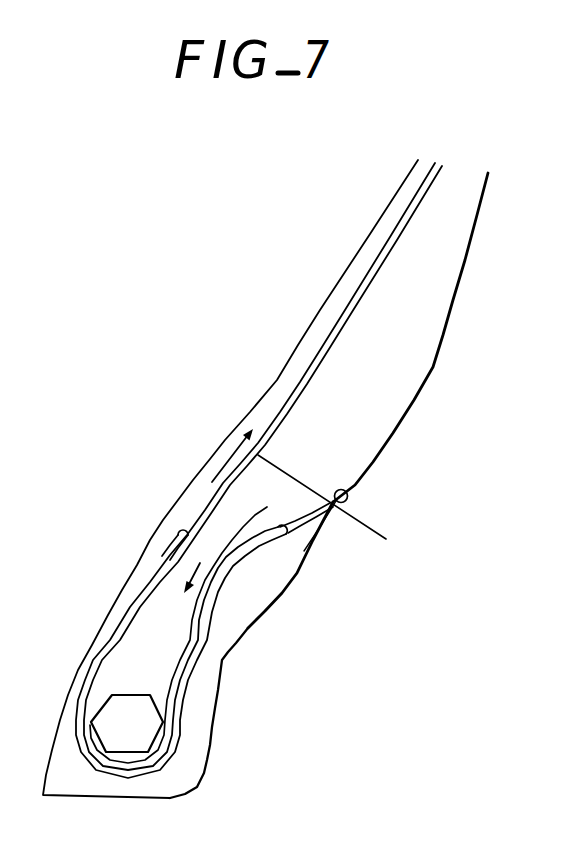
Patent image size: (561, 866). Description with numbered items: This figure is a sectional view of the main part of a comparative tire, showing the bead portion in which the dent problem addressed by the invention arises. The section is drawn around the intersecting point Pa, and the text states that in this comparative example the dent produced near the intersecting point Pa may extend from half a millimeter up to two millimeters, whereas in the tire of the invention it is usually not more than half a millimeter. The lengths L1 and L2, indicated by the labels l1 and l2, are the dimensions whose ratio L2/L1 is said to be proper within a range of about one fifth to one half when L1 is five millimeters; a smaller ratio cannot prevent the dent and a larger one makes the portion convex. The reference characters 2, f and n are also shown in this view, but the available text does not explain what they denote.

The bead wire 2 is at (132, 745).
The tension force direction f is at (229, 460).
The intersecting point Pa is at (348, 497).
The normal line at Pa n is at (330, 504).
The length L1 l1 is at (210, 517).
The length L2 l2 is at (300, 388).